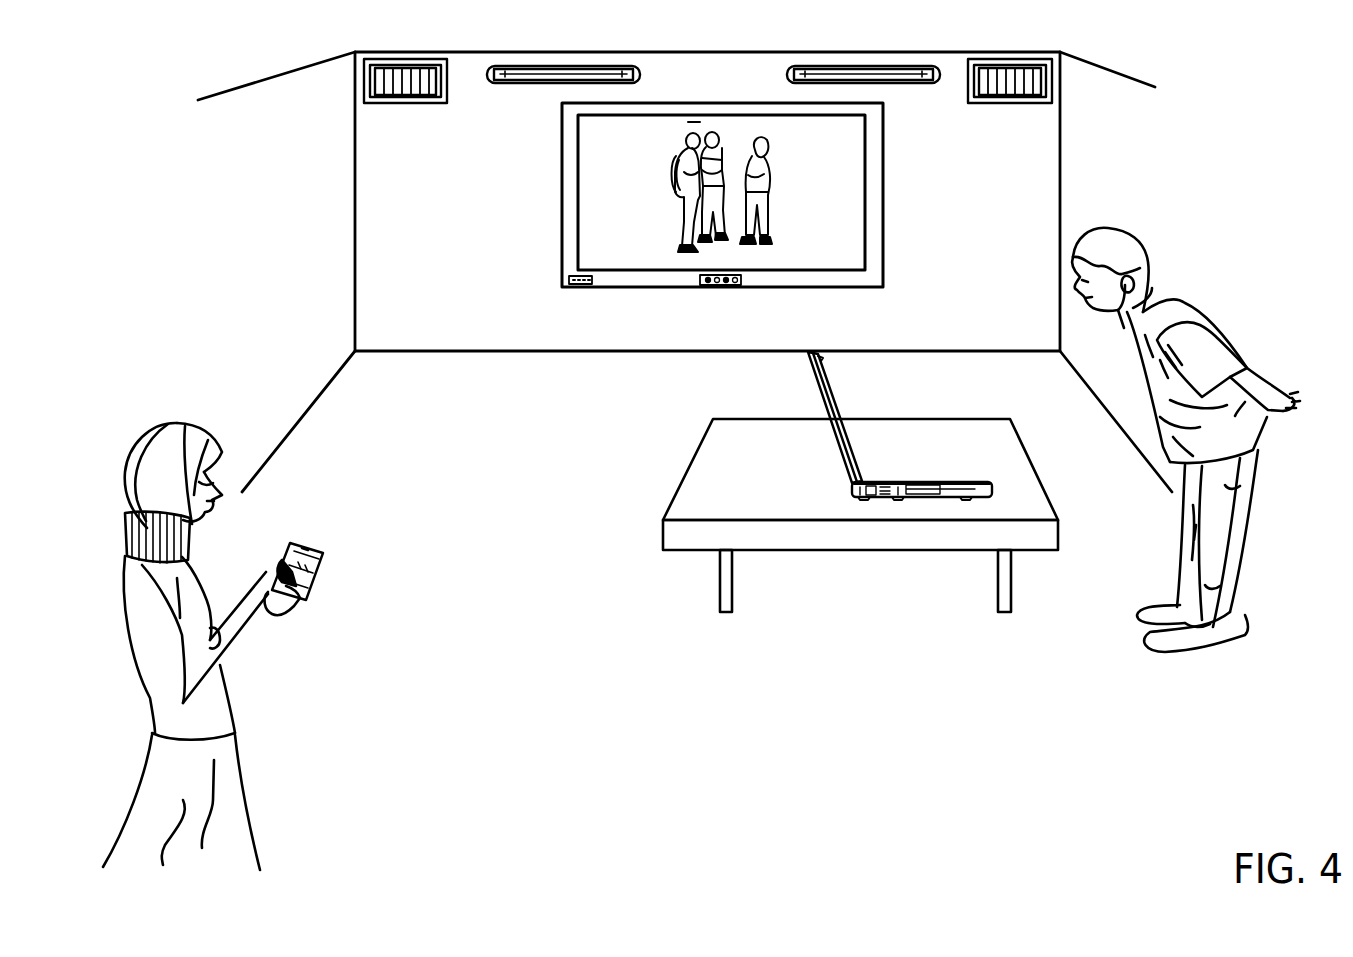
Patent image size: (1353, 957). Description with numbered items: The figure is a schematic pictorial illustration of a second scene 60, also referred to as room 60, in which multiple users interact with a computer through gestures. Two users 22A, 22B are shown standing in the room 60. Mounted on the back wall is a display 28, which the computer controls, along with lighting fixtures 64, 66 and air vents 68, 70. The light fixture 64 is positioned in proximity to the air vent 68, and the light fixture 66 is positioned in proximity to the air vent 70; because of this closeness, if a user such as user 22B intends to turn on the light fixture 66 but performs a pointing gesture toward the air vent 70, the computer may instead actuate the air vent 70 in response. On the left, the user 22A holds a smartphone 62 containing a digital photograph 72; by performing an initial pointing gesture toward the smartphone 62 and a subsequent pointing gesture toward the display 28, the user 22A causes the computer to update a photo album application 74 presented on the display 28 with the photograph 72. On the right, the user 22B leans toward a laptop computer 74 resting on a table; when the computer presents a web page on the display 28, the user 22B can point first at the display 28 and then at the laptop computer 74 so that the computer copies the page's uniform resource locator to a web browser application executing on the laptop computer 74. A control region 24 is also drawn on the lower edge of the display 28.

The second scene 60 is at (1242, 152).
The user 22A is at (233, 706).
The user 22B is at (1146, 242).
The display control / sensor 24 is at (722, 289).
The display 28 is at (884, 272).
The smartphone 62 is at (308, 542).
The lighting fixture 64 is at (508, 85).
The lighting fixture 66 is at (921, 85).
The air vent 68 is at (404, 105).
The air vent 70 is at (1016, 105).
The digital photograph 72 is at (315, 578).
The photo album application / laptop computer 74 is at (689, 135).